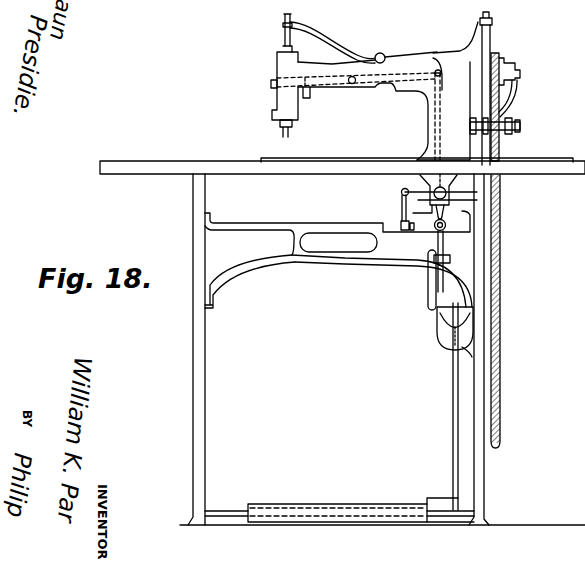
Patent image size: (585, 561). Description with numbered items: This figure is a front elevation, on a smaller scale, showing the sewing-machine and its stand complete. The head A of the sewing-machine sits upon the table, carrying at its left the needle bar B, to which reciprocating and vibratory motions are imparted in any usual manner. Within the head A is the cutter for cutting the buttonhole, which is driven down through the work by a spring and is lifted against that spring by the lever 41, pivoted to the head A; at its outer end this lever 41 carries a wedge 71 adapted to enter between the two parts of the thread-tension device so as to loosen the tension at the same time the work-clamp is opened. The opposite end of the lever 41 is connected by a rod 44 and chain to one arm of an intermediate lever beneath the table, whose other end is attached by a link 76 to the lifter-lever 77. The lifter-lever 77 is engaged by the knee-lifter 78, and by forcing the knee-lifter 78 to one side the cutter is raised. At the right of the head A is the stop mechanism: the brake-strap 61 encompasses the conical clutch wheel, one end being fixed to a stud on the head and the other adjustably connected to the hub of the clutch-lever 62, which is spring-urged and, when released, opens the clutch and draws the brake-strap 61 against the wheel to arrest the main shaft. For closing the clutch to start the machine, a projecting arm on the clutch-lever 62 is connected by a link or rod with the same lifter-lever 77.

The needle bar B is at (283, 42).
The head of the sewing-machine A is at (447, 91).
The lever 41 is at (383, 81).
The rod 44 is at (437, 135).
The brake-strap 61 is at (488, 54).
The clutch-lever 62 is at (517, 105).
The wedge 71 is at (271, 78).
The link 76 is at (401, 208).
The lifter-lever 77 is at (403, 189).
The knee-lifter 78 is at (428, 283).